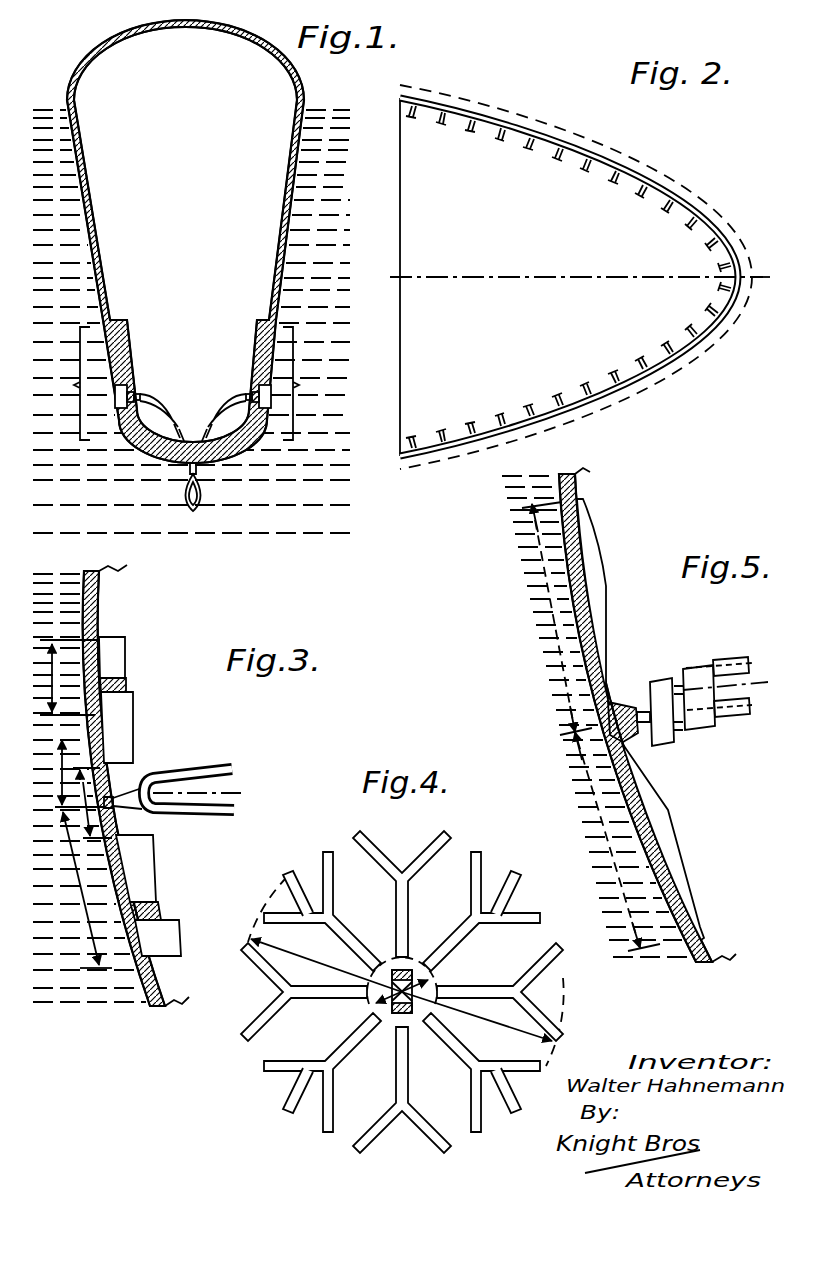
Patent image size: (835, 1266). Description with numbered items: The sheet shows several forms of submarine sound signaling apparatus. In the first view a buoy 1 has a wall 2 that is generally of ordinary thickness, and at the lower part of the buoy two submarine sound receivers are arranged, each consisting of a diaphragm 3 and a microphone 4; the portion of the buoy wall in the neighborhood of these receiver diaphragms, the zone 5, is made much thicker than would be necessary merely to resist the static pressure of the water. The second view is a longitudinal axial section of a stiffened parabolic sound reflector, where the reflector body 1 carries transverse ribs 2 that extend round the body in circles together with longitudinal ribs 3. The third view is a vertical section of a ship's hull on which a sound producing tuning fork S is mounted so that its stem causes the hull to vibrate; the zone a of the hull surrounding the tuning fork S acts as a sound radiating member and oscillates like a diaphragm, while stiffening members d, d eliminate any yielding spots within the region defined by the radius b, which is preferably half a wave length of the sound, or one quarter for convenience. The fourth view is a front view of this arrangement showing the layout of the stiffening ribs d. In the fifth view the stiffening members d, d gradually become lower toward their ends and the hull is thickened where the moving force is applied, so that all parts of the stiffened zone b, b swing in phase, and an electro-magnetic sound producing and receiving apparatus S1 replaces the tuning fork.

In FIG. 1, the buoy 1 is at (185, 234).
In FIG. 2, the buoy 1 is at (603, 163).
In FIG. 1, the wall 2 is at (295, 210).
In FIG. 2, the wall 2 is at (663, 177).
In FIG. 1, the diaphragm 3 is at (115, 403).
In FIG. 2, the diaphragm 3 is at (673, 367).
In FIG. 1, the microphone 4 is at (246, 395).
In FIG. 1, the thickened zone 5 is at (185, 383).
In FIG. 3, the stiffening members d is at (116, 707).
In FIG. 4, the stiffening members d is at (466, 934).
In FIG. 5, the stiffening members d is at (597, 591).
In FIG. 3, the tuning fork S is at (193, 774).
In FIG. 4, the tuning fork S is at (403, 976).
In FIG. 5, the electro-magnetic sound producing and receiving apparatus S1 is at (698, 670).
In FIG. 3, the zone of the hull a is at (83, 789).
In FIG. 4, the zone of the hull a is at (432, 988).
In FIG. 3, the radius of stiffened zone b is at (76, 804).
In FIG. 4, the radius of stiffened zone b is at (401, 994).
In FIG. 5, the radius of stiffened zone b is at (591, 726).